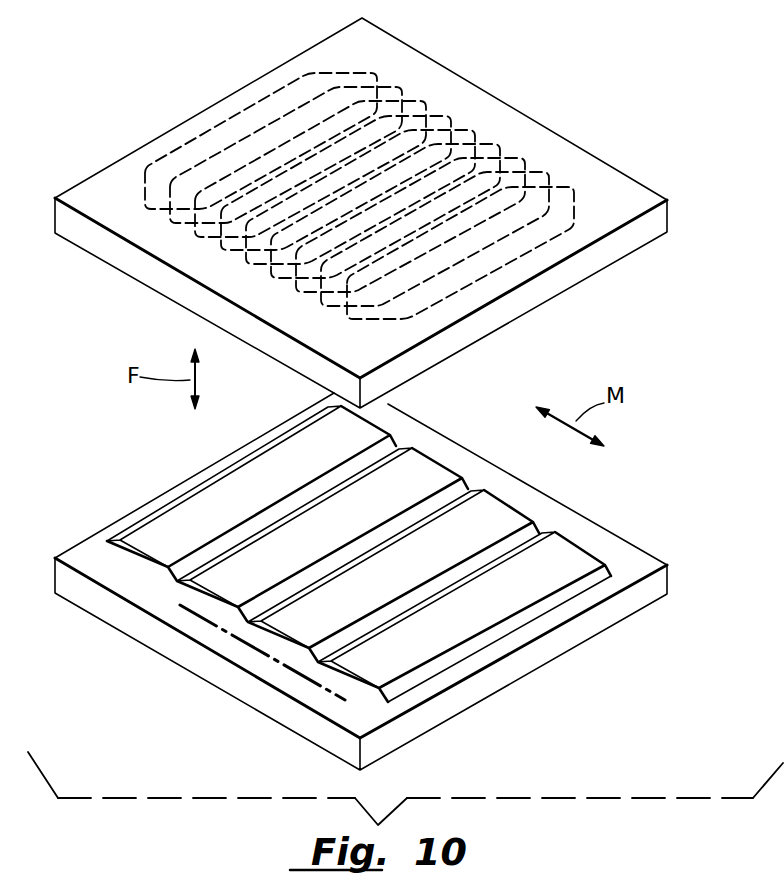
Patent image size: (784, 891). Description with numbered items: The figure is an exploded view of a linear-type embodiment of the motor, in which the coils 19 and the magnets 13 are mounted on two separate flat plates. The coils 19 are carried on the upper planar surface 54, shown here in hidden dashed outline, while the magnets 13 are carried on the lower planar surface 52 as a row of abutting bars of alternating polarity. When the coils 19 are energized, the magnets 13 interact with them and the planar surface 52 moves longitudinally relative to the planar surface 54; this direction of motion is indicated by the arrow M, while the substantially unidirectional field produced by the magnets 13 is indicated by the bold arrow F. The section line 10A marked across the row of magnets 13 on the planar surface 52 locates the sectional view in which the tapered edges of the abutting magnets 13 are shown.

The coils 19 is at (574, 180).
The planar surface 54 is at (650, 225).
The planar surface 52 is at (652, 583).
The magnets 13 is at (567, 557).
The section 10A- 10A is at (330, 696).